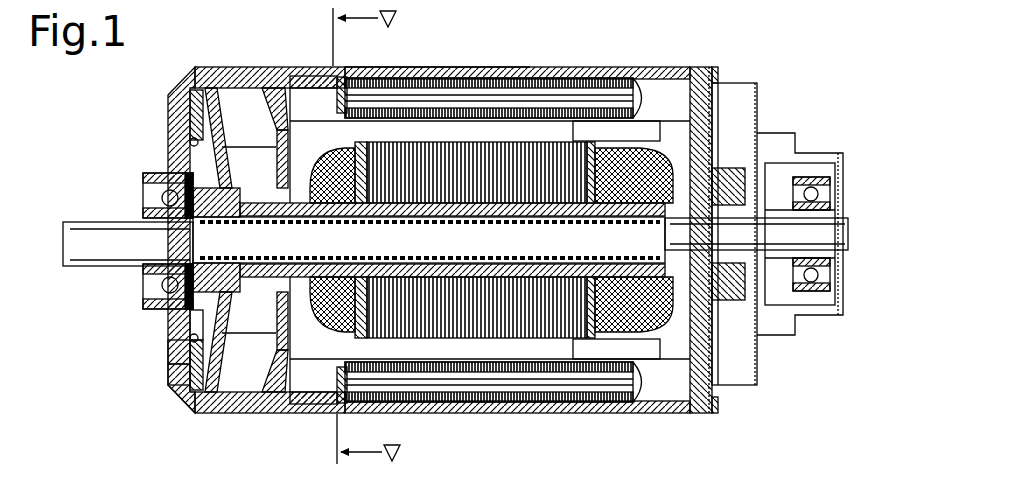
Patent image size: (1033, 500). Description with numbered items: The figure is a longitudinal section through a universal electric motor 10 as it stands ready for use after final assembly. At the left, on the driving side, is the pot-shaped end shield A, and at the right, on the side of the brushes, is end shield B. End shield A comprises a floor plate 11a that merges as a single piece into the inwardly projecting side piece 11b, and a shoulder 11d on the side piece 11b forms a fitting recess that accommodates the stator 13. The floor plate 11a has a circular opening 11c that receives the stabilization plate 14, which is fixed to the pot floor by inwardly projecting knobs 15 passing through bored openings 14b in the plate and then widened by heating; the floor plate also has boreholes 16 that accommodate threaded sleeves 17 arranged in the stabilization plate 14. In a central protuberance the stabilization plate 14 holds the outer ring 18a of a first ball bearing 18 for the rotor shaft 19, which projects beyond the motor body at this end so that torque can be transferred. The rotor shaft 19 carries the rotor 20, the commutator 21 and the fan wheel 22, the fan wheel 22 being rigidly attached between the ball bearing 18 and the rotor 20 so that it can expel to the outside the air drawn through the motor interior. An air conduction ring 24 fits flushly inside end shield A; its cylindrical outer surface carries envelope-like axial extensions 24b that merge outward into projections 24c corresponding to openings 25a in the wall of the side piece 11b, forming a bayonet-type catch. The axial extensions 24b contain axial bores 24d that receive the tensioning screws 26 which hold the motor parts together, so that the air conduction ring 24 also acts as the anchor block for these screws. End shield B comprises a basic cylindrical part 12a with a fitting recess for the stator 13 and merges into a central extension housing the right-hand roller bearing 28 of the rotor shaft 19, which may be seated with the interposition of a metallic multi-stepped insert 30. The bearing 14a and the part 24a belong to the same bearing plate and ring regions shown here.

The end shield at the driving side A is at (200, 66).
The end shield on the side of brushes B is at (619, 60).
The universal electric motor 10 is at (542, 60).
The floor plate 11a is at (175, 133).
The side piece 11b is at (220, 66).
The circular opening 11c is at (167, 398).
The shoulder 11d is at (437, 48).
The basic cylindrical part 12a is at (581, 407).
The stator 13 is at (451, 64).
The stabilization plate 14 is at (186, 345).
The bearing holder ring 14a is at (180, 318).
The bored openings 14b is at (173, 121).
The knobs 15 is at (181, 144).
The boreholes 16 is at (176, 374).
The threaded sleeves 17 is at (172, 364).
The ball bearing 18 is at (150, 205).
The outer ring 18a is at (160, 300).
The rotor shaft 19 is at (110, 250).
The rotor 20 is at (516, 66).
The commutator 21 is at (734, 163).
The fan wheel 22 is at (216, 405).
The air conduction ring 24 is at (265, 418).
The bracket inner plate 24a is at (263, 405).
The axial extensions 24b is at (264, 66).
The projections 24c is at (329, 418).
The axial bores 24d is at (296, 418).
The openings 25a is at (326, 66).
The screws 26 is at (465, 100).
The roller bearing 28 is at (813, 172).
The metallic multi-stepped insert 30 is at (835, 318).